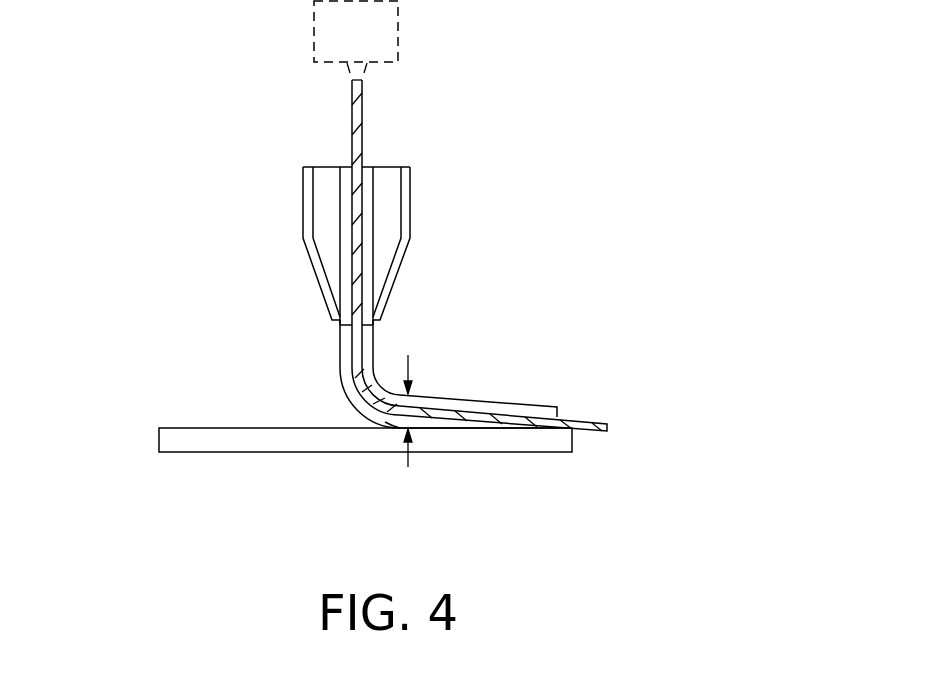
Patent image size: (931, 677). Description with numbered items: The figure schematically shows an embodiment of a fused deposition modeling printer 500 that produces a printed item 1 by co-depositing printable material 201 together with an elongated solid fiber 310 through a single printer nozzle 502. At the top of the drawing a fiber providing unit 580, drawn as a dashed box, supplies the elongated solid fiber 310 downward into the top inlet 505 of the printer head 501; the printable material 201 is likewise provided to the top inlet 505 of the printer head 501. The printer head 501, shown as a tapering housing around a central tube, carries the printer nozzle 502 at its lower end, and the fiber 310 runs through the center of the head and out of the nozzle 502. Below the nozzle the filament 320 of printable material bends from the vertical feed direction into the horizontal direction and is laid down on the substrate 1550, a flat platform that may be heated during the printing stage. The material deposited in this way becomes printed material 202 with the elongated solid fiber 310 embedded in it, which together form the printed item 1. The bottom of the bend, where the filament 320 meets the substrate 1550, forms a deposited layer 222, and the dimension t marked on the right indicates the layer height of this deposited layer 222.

The fiber providing unit 580 is at (255, 33).
The top inlet 505 is at (390, 135).
The fused deposition modeling 3D printer 500 is at (312, 259).
The printer head 501 is at (280, 249).
The 3D printable material 201 is at (386, 202).
The printer nozzle 502 is at (313, 332).
The 3D item 1 is at (404, 416).
The filament 320 is at (287, 362).
The 3D printed material 202 is at (533, 412).
The elongated solid fiber 310 is at (500, 420).
The deposited layer 222 is at (362, 442).
The substrate 1550 is at (144, 439).